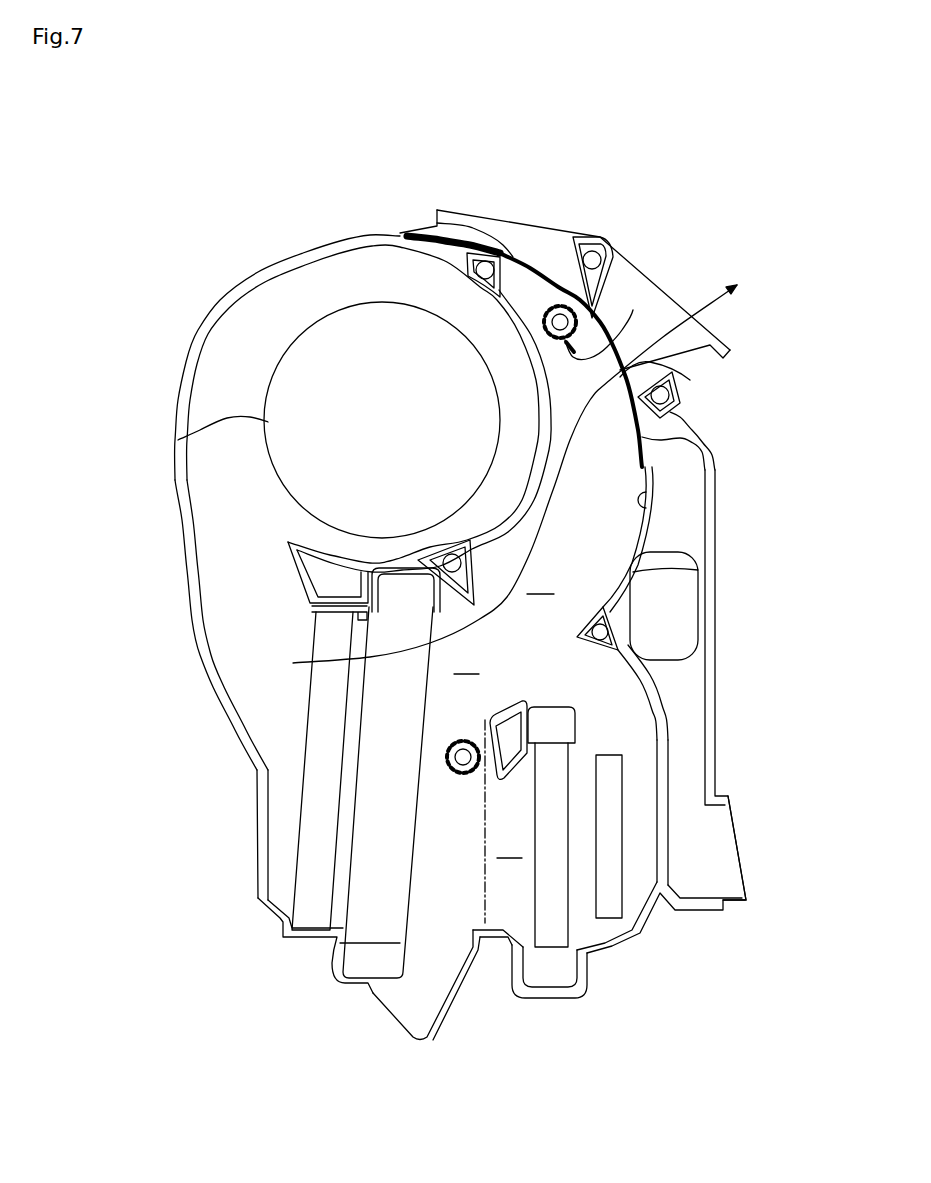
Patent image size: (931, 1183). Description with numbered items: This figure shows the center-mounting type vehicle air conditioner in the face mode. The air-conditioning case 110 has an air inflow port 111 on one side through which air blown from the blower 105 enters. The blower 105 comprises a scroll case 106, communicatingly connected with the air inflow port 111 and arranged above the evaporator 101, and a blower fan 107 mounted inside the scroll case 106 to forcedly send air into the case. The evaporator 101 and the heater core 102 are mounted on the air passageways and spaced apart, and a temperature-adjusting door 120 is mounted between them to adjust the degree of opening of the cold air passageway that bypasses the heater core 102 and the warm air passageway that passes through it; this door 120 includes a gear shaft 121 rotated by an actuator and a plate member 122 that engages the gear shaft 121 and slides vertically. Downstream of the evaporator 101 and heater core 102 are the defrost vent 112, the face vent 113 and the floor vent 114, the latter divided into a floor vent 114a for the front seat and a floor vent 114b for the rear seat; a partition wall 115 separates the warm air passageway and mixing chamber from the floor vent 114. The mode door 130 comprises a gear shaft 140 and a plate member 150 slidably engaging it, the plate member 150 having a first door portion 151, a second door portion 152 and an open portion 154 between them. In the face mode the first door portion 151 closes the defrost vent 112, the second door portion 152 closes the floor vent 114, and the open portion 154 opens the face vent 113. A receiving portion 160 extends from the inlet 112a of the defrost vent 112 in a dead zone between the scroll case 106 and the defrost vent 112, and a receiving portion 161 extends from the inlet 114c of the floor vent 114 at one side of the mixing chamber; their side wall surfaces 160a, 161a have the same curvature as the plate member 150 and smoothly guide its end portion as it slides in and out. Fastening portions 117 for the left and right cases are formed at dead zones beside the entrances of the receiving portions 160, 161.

The evaporator 101 is at (357, 960).
The heater core 102 is at (550, 975).
The blower 105 is at (100, 397).
The scroll case 106 is at (185, 380).
The blower fan 107 is at (178, 438).
The air-conditioning case 110 is at (435, 623).
The air inflow port 111 is at (292, 727).
The defrost vent 112 is at (536, 242).
The inlet of the defrost vent 112a is at (510, 247).
The face vent 113 is at (647, 310).
The floor vent 114 is at (717, 462).
The floor vent for the front seat 114a is at (677, 670).
The floor vent for the rear seat 114b is at (715, 857).
The inlet of the floor vent 114c is at (677, 458).
The partition wall 115 is at (667, 718).
The fastening portions 117 is at (455, 236).
The temperature-adjusting door 120 is at (445, 1094).
The gear shaft 121 is at (455, 772).
The plate member 122 is at (487, 862).
The mode door 130 is at (647, 166).
The gear shaft 140 is at (633, 310).
The plate member 150 is at (547, 267).
The first door portion 151 is at (492, 248).
The second door portion 152 is at (683, 412).
The open portion 154 is at (690, 378).
The receiving portion 160 is at (412, 260).
The side wall surface 160a is at (411, 233).
The receiving portion 161 is at (698, 570).
The side wall surface 161a is at (647, 508).